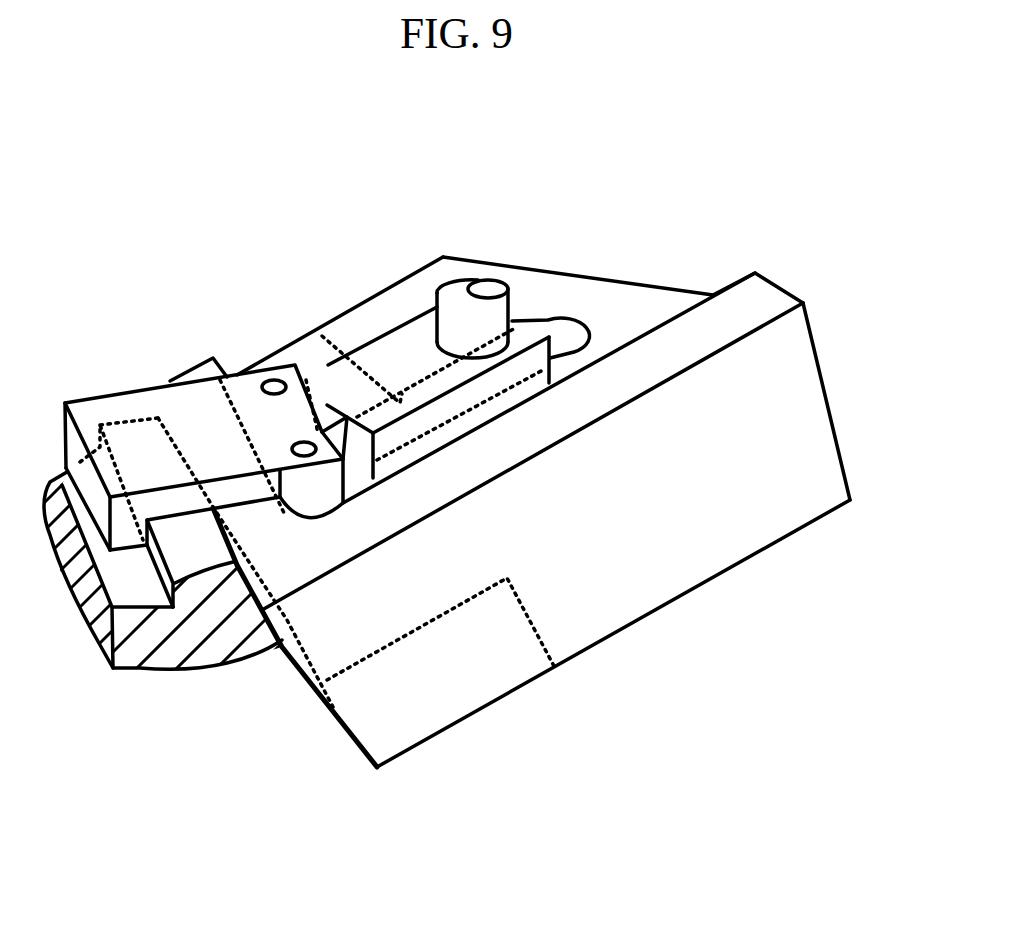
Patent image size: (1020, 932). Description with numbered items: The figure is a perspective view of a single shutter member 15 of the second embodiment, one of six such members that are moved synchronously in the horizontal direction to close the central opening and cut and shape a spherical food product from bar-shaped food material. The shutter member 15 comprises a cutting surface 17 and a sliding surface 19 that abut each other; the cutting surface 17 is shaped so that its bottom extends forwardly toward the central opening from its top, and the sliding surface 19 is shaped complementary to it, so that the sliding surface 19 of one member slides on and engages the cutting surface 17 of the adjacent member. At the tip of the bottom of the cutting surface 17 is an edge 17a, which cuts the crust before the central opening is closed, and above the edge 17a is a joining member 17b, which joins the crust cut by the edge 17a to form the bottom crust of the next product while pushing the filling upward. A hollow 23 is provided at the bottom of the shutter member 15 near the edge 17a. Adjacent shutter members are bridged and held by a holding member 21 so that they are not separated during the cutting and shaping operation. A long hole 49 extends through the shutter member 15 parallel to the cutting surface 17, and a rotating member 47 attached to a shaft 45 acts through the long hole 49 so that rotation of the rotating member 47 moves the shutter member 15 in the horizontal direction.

The shutter member 15 is at (648, 282).
The cutting surface 17 is at (591, 577).
The edge 17a is at (658, 610).
The joining member 17b is at (690, 483).
The sliding surface 19 is at (278, 642).
The holding member 21 is at (108, 410).
The hollow 23 is at (397, 713).
The shaft 45 is at (510, 293).
The rotating member 47 is at (395, 350).
The long hole 49 is at (322, 336).